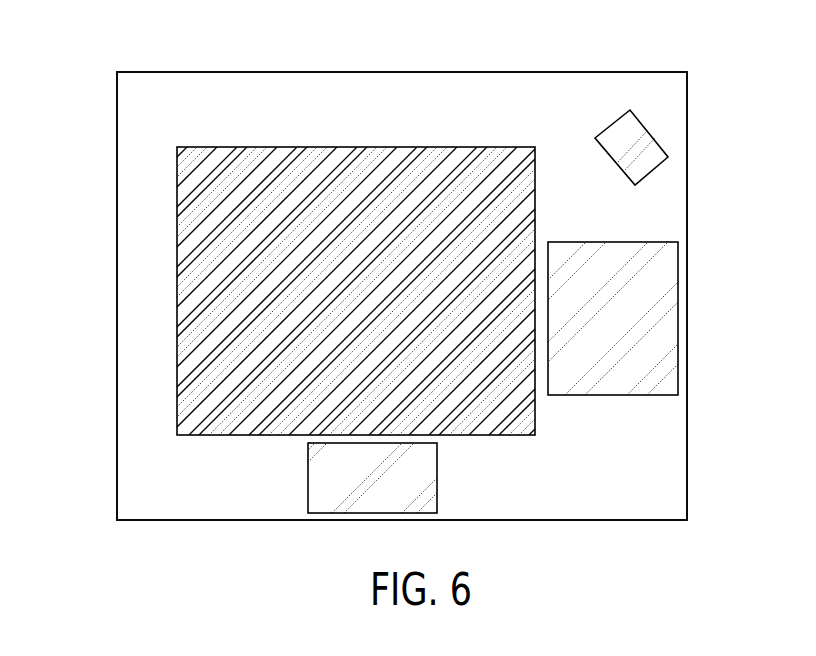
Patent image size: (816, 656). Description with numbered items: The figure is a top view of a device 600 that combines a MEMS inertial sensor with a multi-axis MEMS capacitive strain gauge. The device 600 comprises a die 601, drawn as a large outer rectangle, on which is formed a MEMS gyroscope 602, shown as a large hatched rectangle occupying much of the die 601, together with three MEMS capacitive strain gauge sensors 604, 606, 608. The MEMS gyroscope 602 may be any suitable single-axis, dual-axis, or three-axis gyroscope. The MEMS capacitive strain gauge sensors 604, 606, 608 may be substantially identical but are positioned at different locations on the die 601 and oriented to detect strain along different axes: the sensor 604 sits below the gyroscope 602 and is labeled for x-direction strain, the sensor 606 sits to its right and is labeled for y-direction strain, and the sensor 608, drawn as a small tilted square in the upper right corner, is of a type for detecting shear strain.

The device 600 is at (100, 97).
The die 601 is at (272, 72).
The MEMS gyroscope 602 is at (402, 147).
The MEMS capacitive strain gauge sensor 604 is at (438, 482).
The MEMS capacitive strain gauge sensor 606 is at (679, 307).
The MEMS capacitive strain gauge sensor 608 is at (652, 153).